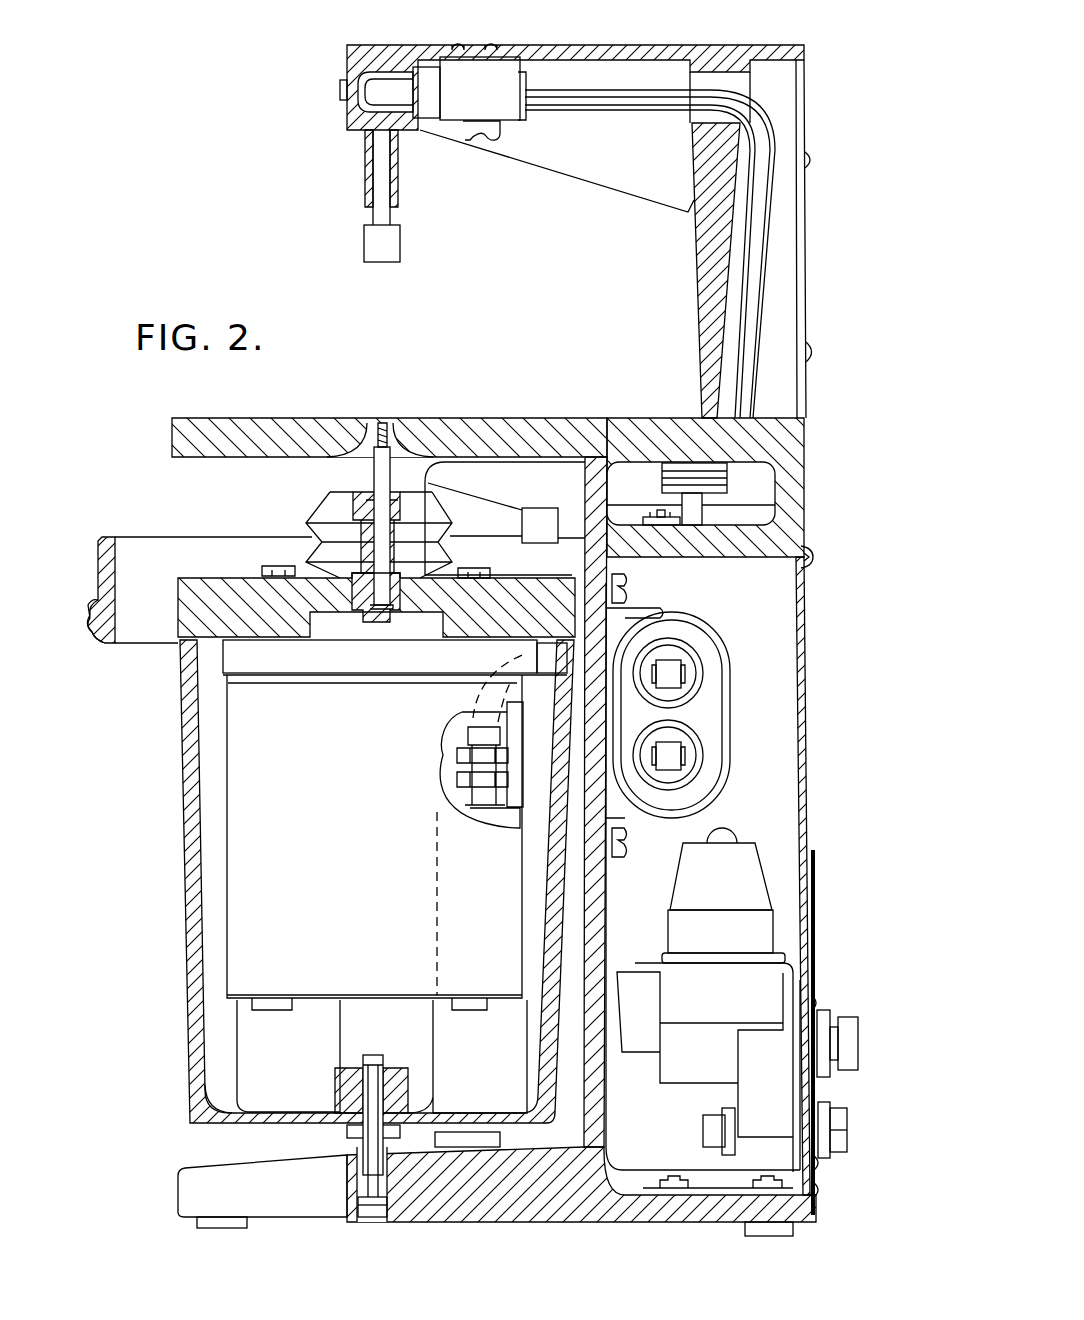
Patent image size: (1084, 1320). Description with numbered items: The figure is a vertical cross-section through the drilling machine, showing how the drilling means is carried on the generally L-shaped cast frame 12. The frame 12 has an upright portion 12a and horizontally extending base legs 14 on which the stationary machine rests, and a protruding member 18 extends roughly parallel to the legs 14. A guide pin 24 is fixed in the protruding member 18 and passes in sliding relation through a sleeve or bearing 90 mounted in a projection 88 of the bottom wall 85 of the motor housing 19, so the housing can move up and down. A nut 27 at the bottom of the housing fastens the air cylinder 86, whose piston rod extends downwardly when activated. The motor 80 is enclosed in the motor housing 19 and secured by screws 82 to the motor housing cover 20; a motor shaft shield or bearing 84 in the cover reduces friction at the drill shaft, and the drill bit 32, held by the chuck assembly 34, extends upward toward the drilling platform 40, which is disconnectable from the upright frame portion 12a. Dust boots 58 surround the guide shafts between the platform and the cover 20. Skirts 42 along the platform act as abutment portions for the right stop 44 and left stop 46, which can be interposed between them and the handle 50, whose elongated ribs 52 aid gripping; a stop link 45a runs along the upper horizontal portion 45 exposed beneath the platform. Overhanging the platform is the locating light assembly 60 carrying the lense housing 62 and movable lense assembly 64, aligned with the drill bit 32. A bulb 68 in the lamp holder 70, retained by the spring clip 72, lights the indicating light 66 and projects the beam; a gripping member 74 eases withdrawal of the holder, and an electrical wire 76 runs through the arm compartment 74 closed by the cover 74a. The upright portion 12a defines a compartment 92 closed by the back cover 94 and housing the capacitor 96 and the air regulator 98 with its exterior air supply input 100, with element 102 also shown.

The cast frame 12 is at (816, 1223).
The upright portion 12a is at (592, 1113).
The base legs 14 is at (187, 1185).
The protruding member 18 is at (482, 1208).
The motor housing 19 is at (185, 885).
The motor housing cover 20 is at (213, 607).
The guide pin 24 is at (370, 1157).
The nut 27 is at (460, 1145).
The drill bit 32 is at (378, 425).
The chuck assembly 34 is at (352, 498).
The drilling platform 40 is at (782, 445).
The skirts 42 is at (540, 487).
The right stop 44 is at (383, 420).
The upper horizontal portion 45 is at (760, 517).
The stop link 45a is at (683, 522).
The left stop 46 is at (521, 517).
The handle 50 is at (98, 580).
The elongated ribs 52 is at (90, 627).
The dust boots 58 is at (328, 520).
The locating light assembly 60 is at (706, 278).
The lense housing 62 is at (367, 172).
The lense assembly 64 is at (367, 215).
The indicating light 66 is at (341, 90).
The bulb 68 is at (388, 82).
The lamp holder 70 is at (440, 80).
The spring clip 72 is at (500, 72).
The gripping member 74 is at (475, 140).
The cover 74a is at (806, 258).
The electrical wire 76 is at (770, 113).
The motor 80 is at (240, 777).
The screws 82 is at (275, 566).
The motor shaft shield or bearing 84 is at (350, 583).
The bottom wall 85 is at (227, 1108).
The air cylinder 86 is at (382, 1056).
The projection 88 is at (347, 1078).
The sleeve or bearing 90 is at (347, 1130).
The compartment 92 is at (772, 755).
The back cover 94 is at (803, 616).
The capacitor 96 is at (727, 657).
The air regulator 98 is at (753, 930).
The external air supply input 100 is at (860, 1037).
The terminal nut 102 is at (853, 1132).